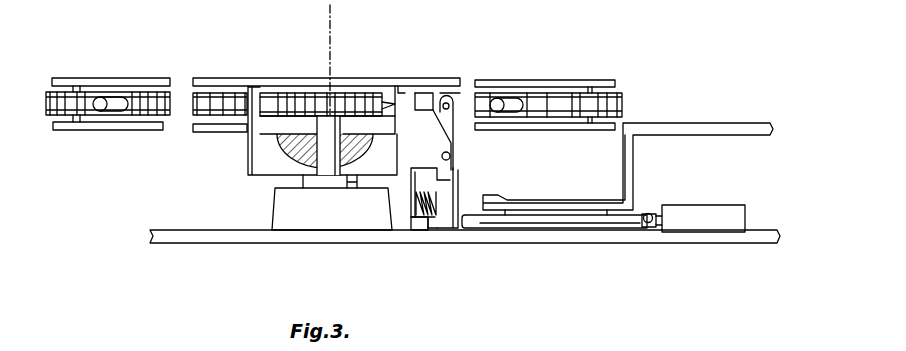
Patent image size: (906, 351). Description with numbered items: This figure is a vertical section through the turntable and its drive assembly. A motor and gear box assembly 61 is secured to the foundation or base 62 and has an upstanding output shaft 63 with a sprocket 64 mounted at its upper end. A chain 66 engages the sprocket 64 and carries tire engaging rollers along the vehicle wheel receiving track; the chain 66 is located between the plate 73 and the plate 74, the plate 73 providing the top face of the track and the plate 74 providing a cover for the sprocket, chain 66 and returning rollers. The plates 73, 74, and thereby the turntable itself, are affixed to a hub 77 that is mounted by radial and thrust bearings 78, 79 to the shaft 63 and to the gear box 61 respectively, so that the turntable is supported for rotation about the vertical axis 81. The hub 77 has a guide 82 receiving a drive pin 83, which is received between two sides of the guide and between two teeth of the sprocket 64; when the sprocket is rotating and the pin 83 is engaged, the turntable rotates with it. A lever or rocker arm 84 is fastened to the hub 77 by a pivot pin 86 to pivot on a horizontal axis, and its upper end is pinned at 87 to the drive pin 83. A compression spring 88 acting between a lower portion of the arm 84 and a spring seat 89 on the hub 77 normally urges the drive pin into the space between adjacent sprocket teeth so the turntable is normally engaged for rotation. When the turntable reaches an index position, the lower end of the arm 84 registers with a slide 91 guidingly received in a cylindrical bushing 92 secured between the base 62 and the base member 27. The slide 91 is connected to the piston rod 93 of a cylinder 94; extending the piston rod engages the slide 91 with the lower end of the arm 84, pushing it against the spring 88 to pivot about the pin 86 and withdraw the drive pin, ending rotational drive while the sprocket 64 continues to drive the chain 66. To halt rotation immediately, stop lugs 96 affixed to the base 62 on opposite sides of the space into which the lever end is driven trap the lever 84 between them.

The base member 27 is at (722, 127).
The motor and gear box assembly 61 is at (300, 218).
The base 62 is at (460, 231).
The output shaft 63 is at (327, 150).
The sprocket 64 is at (312, 93).
The chain 66 is at (553, 103).
The plate 73 is at (558, 127).
The plate 74 is at (550, 80).
The hub 77 is at (252, 177).
The radial and thrust bearings 78 is at (280, 143).
The radial and thrust bearings 79 is at (317, 183).
The vertical axis 81 is at (332, 33).
The guide 82 is at (410, 93).
The drive pin 83 is at (449, 96).
The lever or rocker arm 84 is at (452, 178).
The pivot pin 86 is at (450, 156).
The pin 87 is at (462, 86).
The compression spring 88 is at (417, 228).
The spring seat 89 is at (405, 202).
The slide 91 is at (572, 218).
The cylindrical bushing 92 is at (592, 230).
The piston rod 93 is at (648, 213).
The cylinder 94 is at (732, 218).
The stop lugs 96 is at (418, 231).